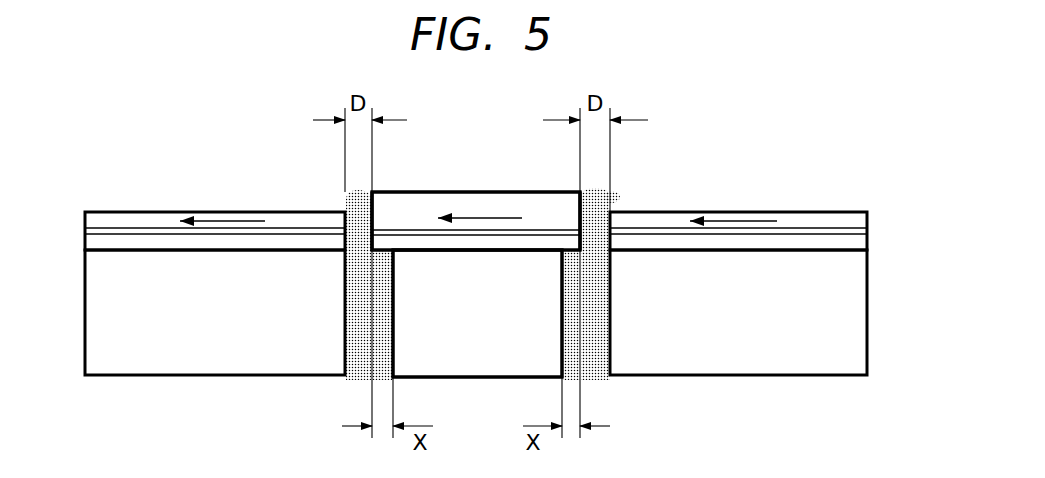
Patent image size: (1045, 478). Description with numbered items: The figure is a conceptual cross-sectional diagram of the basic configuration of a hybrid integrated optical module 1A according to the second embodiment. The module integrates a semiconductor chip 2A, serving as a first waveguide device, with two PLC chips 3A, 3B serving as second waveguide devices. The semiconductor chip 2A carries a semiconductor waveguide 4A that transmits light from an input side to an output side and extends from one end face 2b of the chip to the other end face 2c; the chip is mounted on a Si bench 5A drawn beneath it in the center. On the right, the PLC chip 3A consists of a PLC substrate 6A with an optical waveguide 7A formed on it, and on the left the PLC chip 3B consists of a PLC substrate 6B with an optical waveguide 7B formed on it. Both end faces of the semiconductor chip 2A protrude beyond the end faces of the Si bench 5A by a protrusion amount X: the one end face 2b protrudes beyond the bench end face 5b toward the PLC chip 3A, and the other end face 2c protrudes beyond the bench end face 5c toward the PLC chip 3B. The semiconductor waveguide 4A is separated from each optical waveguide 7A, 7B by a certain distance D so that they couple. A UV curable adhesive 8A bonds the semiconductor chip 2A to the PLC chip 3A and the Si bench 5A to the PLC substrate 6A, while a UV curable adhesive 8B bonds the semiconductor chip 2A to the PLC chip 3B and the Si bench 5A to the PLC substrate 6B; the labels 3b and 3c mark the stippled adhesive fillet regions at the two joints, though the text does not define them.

The hybrid integrated optical module 1A is at (480, 168).
The semiconductor chip 2A is at (497, 190).
The one end face of the semiconductor chip 2b is at (580, 188).
The other end face of the semiconductor chip 2c is at (372, 190).
The PLC chip 3A is at (778, 210).
The PLC chip 3B is at (200, 210).
The right adhesive fillet 3b is at (612, 200).
The left adhesive fillet 3c is at (348, 193).
The semiconductor waveguide 4A is at (423, 230).
The Si bench 5A is at (452, 378).
The one end face of the Si bench 5b is at (568, 357).
The other end face of the Si bench 5c is at (380, 332).
The PLC substrate 6A is at (755, 362).
The PLC substrate 6B is at (156, 362).
The optical waveguide 7A is at (828, 230).
The optical waveguide 7B is at (143, 228).
The UV curable adhesive 8A is at (605, 365).
The UV curable adhesive 8B is at (360, 362).